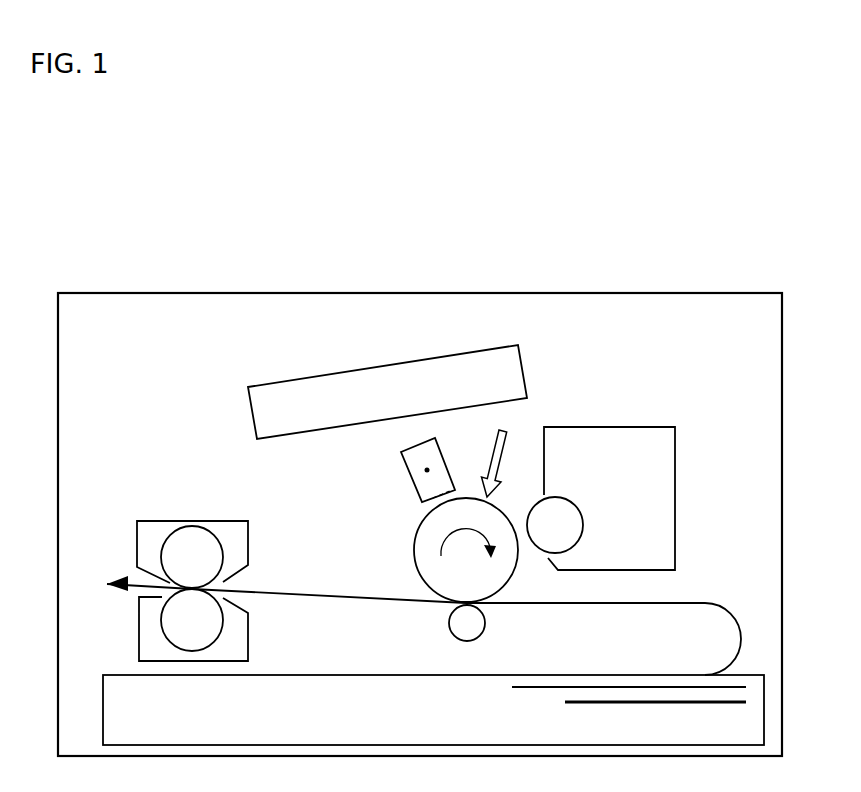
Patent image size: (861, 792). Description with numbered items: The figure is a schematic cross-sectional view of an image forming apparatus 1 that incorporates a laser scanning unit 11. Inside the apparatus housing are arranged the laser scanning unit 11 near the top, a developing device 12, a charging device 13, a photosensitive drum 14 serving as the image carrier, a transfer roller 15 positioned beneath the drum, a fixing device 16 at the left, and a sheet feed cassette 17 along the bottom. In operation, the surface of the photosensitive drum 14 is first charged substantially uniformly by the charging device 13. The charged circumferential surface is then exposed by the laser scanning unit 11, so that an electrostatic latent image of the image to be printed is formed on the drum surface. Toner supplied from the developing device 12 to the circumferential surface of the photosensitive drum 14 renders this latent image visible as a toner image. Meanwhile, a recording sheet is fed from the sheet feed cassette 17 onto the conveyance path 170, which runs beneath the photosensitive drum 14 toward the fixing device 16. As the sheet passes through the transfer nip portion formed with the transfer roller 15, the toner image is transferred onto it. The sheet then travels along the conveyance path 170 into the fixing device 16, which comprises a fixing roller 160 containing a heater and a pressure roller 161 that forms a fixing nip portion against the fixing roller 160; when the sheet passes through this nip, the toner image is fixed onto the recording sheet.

The image forming apparatus 1 is at (554, 293).
The laser scanning unit 11 is at (340, 369).
The developing device 12 is at (594, 427).
The charging device 13 is at (413, 483).
The photosensitive drum 14 is at (416, 576).
The transfer roller 15 is at (486, 622).
The fixing device 16 is at (162, 558).
The fixing roller 160 is at (161, 556).
The pressure roller 161 is at (163, 629).
The conveyance path 170 is at (698, 603).
The sheet feed cassette 17 is at (764, 713).